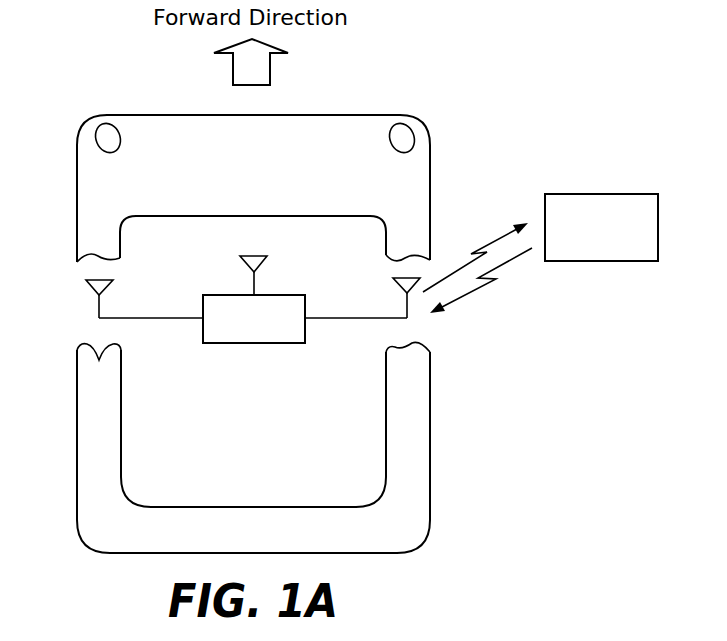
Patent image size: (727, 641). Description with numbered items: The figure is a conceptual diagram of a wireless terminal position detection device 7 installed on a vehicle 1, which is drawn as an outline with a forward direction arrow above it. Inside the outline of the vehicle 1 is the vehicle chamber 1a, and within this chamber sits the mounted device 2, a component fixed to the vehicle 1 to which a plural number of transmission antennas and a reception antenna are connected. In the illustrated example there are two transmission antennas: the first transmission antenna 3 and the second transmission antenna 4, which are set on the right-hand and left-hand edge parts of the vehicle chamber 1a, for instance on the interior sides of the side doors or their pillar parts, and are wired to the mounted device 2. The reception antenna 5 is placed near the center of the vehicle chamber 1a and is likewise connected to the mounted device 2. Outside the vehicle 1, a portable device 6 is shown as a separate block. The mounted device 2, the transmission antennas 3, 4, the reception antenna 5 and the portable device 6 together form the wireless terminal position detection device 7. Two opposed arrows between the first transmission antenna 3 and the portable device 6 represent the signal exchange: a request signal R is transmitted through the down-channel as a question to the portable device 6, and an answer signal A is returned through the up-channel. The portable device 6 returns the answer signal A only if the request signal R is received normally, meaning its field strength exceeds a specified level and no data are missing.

The vehicle 1 is at (312, 114).
The vehicle chamber 1a is at (297, 217).
The mounted device 2 is at (253, 343).
The first transmission antenna 3 is at (420, 278).
The second transmission antenna 4 is at (86, 283).
The reception antenna 5 is at (240, 258).
The portable device 6 is at (605, 194).
The wireless terminal position detection device 7 is at (520, 119).
The request signal R is at (500, 238).
The answer signal A is at (499, 268).